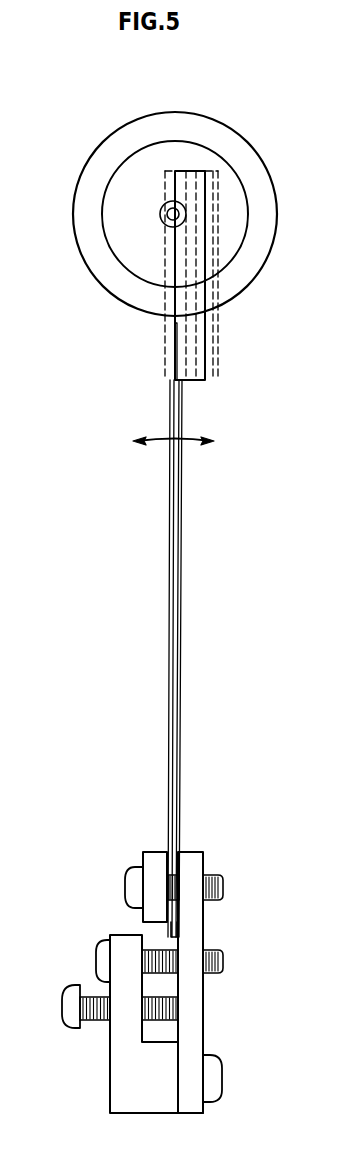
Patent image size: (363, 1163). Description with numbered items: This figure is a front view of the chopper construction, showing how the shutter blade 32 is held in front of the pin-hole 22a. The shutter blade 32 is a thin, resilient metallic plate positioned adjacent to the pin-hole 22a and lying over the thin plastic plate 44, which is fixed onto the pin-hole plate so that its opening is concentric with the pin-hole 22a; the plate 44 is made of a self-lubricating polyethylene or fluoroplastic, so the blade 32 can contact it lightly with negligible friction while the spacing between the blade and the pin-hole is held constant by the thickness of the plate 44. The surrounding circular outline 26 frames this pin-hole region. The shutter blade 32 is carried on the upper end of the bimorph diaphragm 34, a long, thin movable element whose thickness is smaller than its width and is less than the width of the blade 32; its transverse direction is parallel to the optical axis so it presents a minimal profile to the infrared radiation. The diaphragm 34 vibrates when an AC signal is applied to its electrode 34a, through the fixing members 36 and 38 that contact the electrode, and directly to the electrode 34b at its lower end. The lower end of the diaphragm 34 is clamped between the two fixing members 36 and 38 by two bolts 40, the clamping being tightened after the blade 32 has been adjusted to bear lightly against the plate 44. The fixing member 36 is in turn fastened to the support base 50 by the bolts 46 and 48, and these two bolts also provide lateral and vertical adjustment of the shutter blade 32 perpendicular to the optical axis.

The wheel 26 is at (169, 124).
The thin plastic plate 44 is at (202, 158).
The pin-hole 22a is at (170, 227).
The shutter blade 32 is at (206, 350).
The bimorph diaphragm 34 is at (172, 505).
The electrode 34a is at (207, 653).
The electrode 34b is at (178, 934).
The fixing member 36 is at (193, 858).
The fixing member 38 is at (151, 852).
The bolt 40 is at (136, 887).
The bolt 46 is at (100, 955).
The bolt 48 is at (70, 1000).
The support base 50 is at (118, 1067).